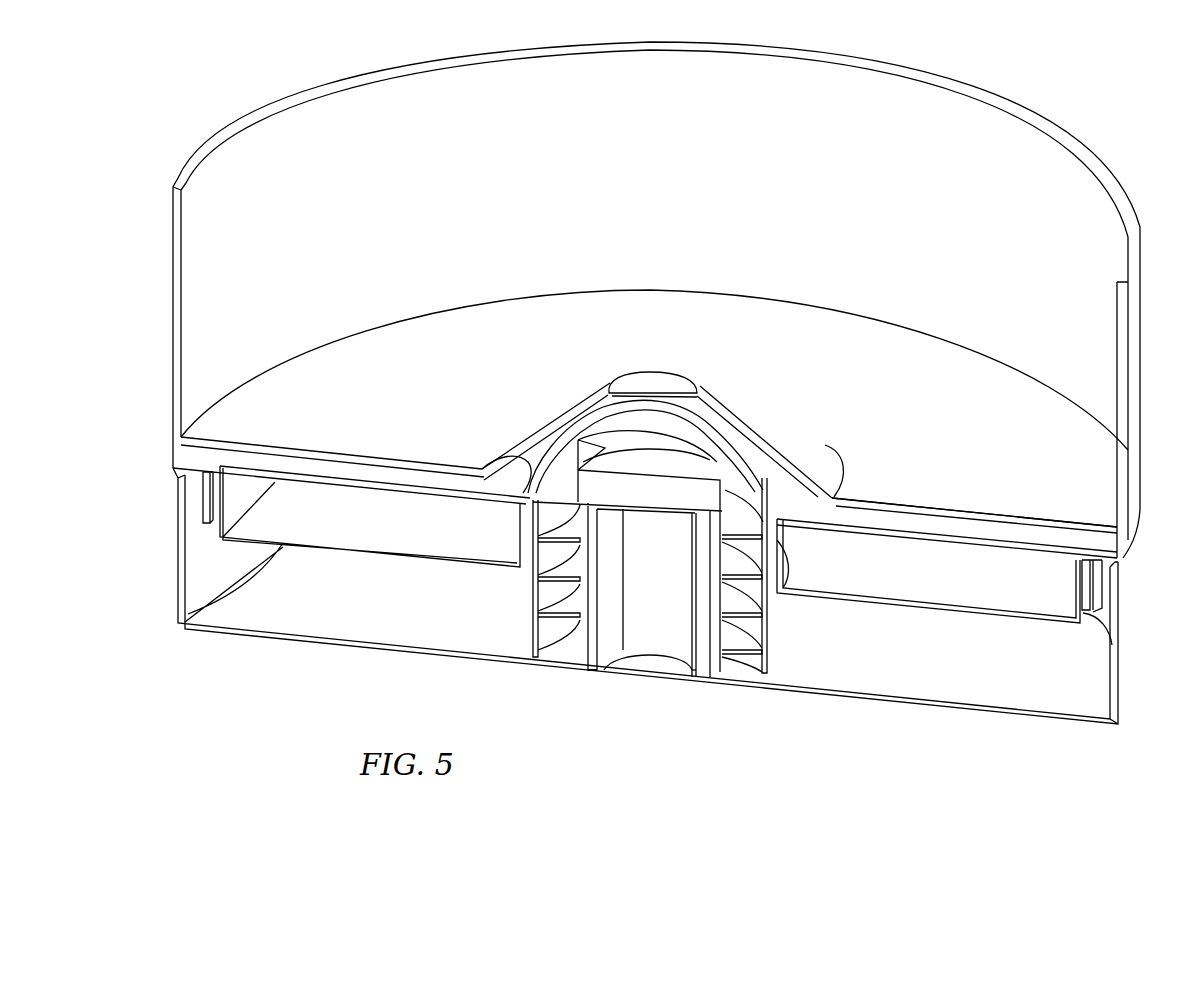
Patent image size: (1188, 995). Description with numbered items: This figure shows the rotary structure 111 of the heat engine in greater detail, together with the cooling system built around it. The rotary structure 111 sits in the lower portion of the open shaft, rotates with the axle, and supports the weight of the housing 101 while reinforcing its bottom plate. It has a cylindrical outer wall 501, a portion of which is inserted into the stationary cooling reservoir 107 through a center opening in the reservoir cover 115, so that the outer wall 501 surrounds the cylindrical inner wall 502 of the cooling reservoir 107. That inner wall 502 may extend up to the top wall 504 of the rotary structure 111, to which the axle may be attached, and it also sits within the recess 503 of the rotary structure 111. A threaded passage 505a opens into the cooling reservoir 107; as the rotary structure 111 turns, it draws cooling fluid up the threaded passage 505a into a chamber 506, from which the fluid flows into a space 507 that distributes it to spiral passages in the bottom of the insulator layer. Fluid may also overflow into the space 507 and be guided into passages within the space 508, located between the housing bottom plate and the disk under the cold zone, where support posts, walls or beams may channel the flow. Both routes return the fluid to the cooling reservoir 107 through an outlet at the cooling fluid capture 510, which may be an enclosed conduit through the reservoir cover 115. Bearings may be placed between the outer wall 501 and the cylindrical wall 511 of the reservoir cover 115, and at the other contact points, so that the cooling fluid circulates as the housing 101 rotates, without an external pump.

The housing 101 is at (1140, 408).
The cooling reservoir 107 is at (953, 684).
The rotary structure 111 is at (672, 712).
The reservoir cover 115 is at (333, 535).
The cylindrical outer wall 501 is at (538, 600).
The cylindrical inner wall 502 is at (657, 643).
The recess 503 is at (603, 690).
The top wall 504 is at (663, 494).
The threaded passage 505a is at (567, 603).
The chamber 506 is at (652, 437).
The space 507 is at (522, 462).
The space 508 is at (962, 522).
The cooling fluid capture 510 is at (205, 538).
The cylindrical wall 511 is at (516, 528).